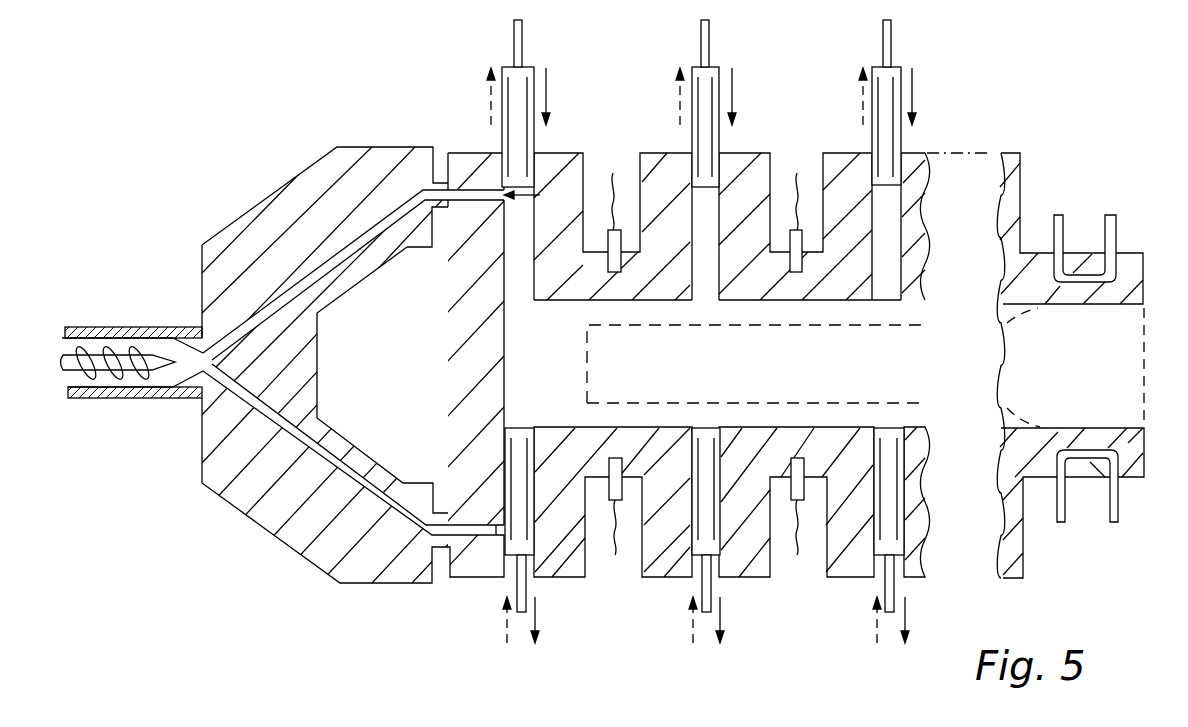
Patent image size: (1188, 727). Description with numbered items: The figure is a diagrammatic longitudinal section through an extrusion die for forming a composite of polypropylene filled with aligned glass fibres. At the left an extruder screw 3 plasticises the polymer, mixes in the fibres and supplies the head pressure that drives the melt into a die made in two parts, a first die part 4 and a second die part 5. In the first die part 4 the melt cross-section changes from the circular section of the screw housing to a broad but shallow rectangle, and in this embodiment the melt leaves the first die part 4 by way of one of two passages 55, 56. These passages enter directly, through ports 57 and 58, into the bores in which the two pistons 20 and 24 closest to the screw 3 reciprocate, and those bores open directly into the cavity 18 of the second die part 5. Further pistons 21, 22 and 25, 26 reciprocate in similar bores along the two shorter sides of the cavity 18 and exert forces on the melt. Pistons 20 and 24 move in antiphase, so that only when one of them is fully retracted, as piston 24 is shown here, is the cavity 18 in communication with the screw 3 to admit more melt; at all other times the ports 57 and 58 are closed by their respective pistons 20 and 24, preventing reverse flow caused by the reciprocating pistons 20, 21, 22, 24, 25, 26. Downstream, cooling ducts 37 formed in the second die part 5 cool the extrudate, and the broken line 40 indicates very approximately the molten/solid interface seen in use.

The extruder screw 3 is at (131, 345).
The first die part 4 is at (267, 200).
The second die part 5 is at (745, 151).
The cavity 18 is at (652, 373).
The piston 20 is at (523, 455).
The piston 21 is at (700, 522).
The piston 22 is at (880, 540).
The piston 24 is at (522, 98).
The piston 25 is at (700, 127).
The piston 26 is at (885, 127).
The cooling ducts 37 is at (1116, 232).
The molten/solid interface line 40 is at (775, 327).
The passage 55 is at (345, 468).
The passage 56 is at (355, 243).
The port 57 is at (499, 537).
The port 58 is at (540, 195).